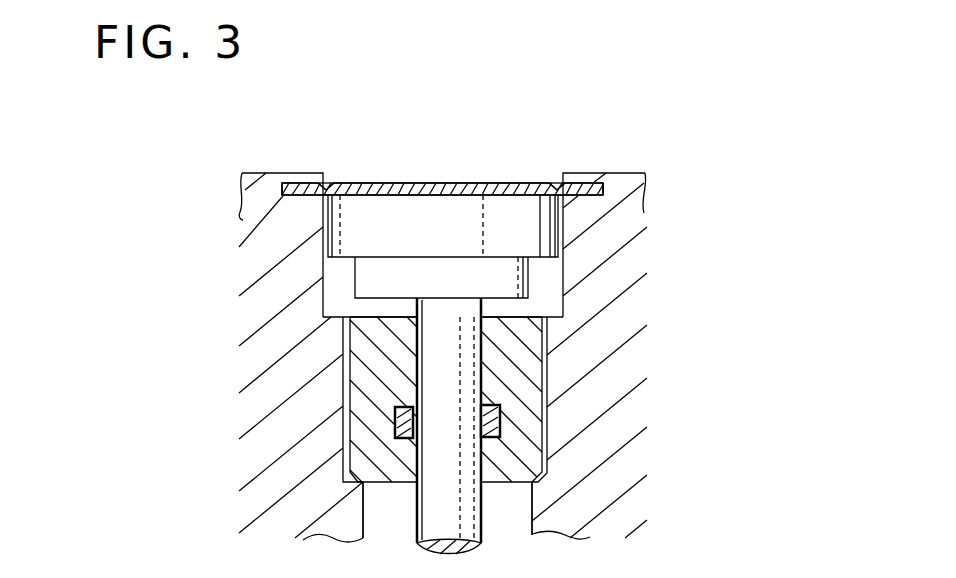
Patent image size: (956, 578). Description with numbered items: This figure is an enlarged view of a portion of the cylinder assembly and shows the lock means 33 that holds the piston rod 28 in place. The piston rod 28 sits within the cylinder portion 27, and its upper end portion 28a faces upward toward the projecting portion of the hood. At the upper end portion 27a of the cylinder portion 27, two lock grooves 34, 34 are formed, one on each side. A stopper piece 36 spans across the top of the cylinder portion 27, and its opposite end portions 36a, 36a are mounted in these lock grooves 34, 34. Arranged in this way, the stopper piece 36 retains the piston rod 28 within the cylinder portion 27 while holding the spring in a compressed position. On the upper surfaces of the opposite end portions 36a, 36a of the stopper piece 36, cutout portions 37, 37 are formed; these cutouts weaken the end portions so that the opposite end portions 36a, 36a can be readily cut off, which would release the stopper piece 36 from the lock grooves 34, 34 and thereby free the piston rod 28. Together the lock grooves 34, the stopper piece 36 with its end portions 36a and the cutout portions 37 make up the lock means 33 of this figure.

The cylinder portion 27 is at (529, 504).
The upper end portion of the cylinder portion 27a is at (545, 238).
The piston rod 28 is at (483, 362).
The upper end portion of the piston rod 28a is at (250, 294).
The lock means 33 is at (443, 145).
The lock grooves 34 is at (300, 204).
The stopper piece 36 is at (395, 181).
The opposite end portions of the stopper piece 36a is at (293, 181).
The cutout portions 37 is at (327, 181).